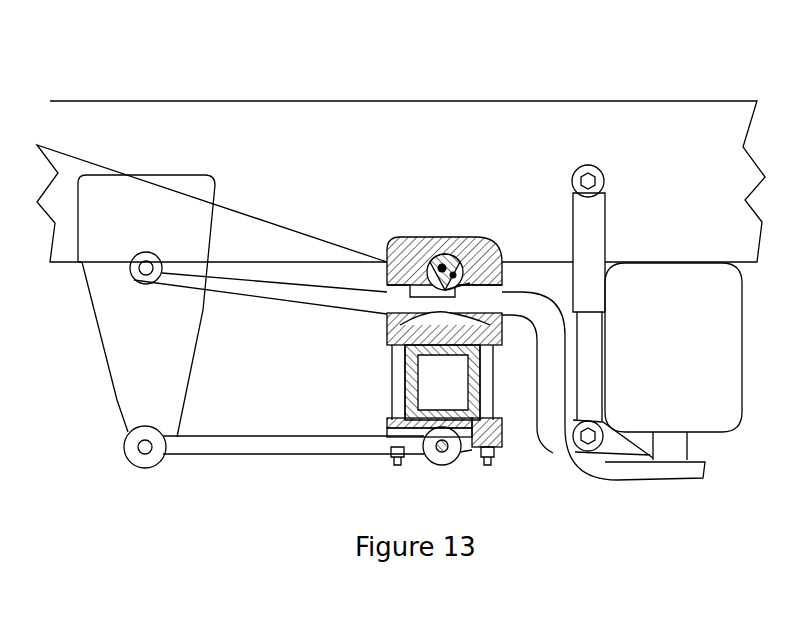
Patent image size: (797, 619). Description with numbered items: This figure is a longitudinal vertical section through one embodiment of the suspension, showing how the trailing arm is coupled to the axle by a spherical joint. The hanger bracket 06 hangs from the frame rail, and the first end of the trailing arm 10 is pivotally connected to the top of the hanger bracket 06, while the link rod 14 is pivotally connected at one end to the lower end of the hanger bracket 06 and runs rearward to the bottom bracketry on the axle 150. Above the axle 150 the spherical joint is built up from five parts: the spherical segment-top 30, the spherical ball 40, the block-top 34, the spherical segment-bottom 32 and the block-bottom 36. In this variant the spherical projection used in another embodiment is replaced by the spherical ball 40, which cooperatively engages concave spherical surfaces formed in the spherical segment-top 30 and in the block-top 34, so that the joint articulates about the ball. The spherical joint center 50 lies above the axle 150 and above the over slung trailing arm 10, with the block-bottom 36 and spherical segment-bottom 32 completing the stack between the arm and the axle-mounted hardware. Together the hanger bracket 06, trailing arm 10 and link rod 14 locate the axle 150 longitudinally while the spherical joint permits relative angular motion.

The hanger bracket 06 is at (165, 402).
The trailing arm 10 is at (277, 295).
The link rod 14 is at (255, 447).
The spherical segment-top 30 is at (470, 281).
The spherical segment-bottom 32 is at (408, 252).
The block-top 34 is at (441, 319).
The block-bottom 36 is at (403, 330).
The spherical ball 40 is at (453, 275).
The spherical joint center 50 is at (442, 268).
The axle 150 is at (415, 368).